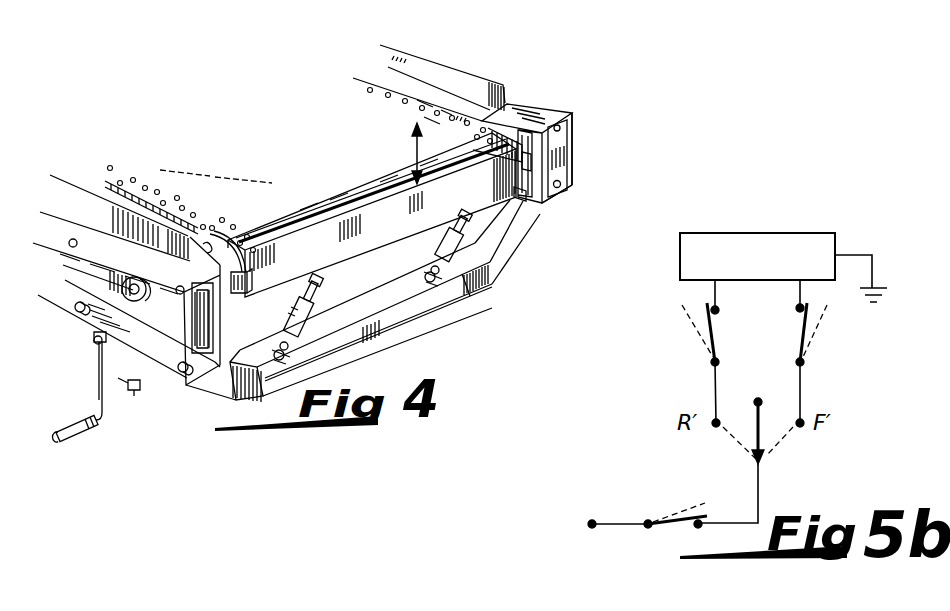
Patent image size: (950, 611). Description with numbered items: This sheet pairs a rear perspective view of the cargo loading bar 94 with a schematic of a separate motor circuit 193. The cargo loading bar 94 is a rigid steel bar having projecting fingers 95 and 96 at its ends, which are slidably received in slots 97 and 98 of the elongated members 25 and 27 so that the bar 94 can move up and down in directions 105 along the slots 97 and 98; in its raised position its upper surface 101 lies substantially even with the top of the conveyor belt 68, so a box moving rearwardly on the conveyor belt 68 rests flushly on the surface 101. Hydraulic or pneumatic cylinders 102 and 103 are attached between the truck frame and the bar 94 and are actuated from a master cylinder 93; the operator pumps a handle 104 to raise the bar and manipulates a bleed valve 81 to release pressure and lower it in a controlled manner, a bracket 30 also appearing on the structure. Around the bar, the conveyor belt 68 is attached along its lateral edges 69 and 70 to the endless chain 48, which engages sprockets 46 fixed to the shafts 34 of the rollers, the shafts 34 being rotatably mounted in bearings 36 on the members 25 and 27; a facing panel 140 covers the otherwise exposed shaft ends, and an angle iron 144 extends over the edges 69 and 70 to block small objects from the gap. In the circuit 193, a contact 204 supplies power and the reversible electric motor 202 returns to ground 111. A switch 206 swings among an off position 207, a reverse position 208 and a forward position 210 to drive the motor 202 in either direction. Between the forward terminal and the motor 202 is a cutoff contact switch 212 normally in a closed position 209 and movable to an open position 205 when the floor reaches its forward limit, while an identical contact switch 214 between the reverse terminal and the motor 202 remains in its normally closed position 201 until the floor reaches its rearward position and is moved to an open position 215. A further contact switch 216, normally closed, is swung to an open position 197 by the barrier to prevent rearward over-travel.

In FIG. 4, the angle iron 144 is at (457, 67).
In FIG. 4, the lateral edge 70 is at (395, 98).
In FIG. 4, the directions 105 is at (412, 152).
In FIG. 4, the conveyor belt 68 is at (311, 184).
In FIG. 4, the cargo loading bar 94 is at (368, 250).
In FIG. 4, the upper surface 101 is at (388, 193).
In FIG. 4, the bracket 30 is at (537, 115).
In FIG. 4, the facing panel 140 is at (573, 148).
In FIG. 4, the projecting finger 96 is at (528, 163).
In FIG. 4, the elongated member 27 is at (562, 197).
In FIG. 4, the slot 98 is at (523, 192).
In FIG. 4, the lateral edge 69 is at (142, 178).
In FIG. 4, the endless chain 48 is at (105, 183).
In FIG. 4, the sprocket 46 is at (213, 240).
In FIG. 4, the projecting finger 95 is at (236, 294).
In FIG. 4, the slot 97 is at (199, 330).
In FIG. 4, the bearings 36 is at (125, 276).
In FIG. 4, the shaft 34 is at (141, 300).
In FIG. 4, the master cylinder 93 is at (108, 365).
In FIG. 4, the handle 104 is at (100, 428).
In FIG. 4, the bleed valve 81 is at (137, 386).
In FIG. 4, the elongated member 25 is at (192, 383).
In FIG. 4, the hydraulic or pneumatic cylinder 102 is at (311, 318).
In FIG. 4, the hydraulic or pneumatic cylinder 103 is at (437, 257).
In FIG. 5B, the circuit 193 is at (655, 320).
In FIG. 5B, the reversible electric motor 202 is at (783, 269).
In FIG. 5B, the contact 204 is at (855, 253).
In FIG. 5B, the ground 111 is at (877, 284).
In FIG. 5B, the closed position 201 is at (710, 333).
In FIG. 5B, the open position 215 is at (698, 345).
In FIG. 5B, the contact switch 214 is at (703, 309).
In FIG. 5B, the closed position 209 is at (803, 340).
In FIG. 5B, the open position 205 is at (823, 320).
In FIG. 5B, the cutoff contact switch 212 is at (808, 334).
In FIG. 5B, the off position 207 is at (752, 402).
In FIG. 5B, the switch 206 is at (766, 447).
In FIG. 5B, the reverse position 208 is at (733, 436).
In FIG. 5B, the forward position 210 is at (777, 436).
In FIG. 5B, the open position 197 is at (683, 508).
In FIG. 5B, the contact switch 216 is at (687, 530).